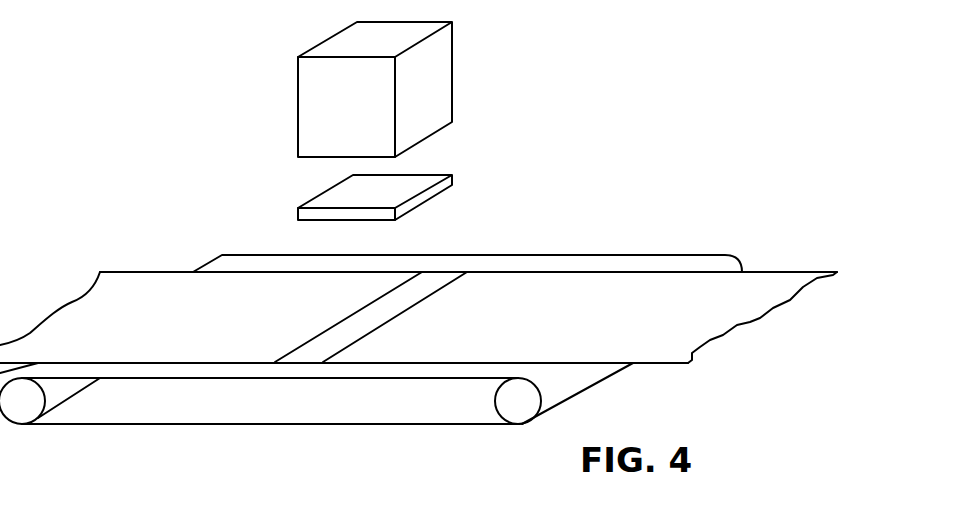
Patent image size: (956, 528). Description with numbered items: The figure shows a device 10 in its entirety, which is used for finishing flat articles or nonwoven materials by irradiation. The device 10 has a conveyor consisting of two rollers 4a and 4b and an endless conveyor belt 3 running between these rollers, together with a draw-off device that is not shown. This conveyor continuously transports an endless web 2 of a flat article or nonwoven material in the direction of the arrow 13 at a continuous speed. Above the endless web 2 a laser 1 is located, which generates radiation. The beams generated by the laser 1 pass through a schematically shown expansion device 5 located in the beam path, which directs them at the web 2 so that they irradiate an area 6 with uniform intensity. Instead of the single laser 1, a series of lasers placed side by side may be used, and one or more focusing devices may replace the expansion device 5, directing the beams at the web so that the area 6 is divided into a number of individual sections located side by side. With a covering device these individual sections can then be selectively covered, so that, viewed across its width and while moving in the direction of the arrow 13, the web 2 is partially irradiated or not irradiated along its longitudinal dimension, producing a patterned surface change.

The laser 1 is at (435, 113).
The endless web 2 is at (757, 287).
The endless conveyor belt 3 is at (392, 408).
The roller 4a is at (523, 412).
The roller 4b is at (20, 410).
The expansion device 5 is at (408, 192).
The area 6 is at (387, 308).
The device 10 is at (78, 247).
The arrow 13 is at (720, 383).